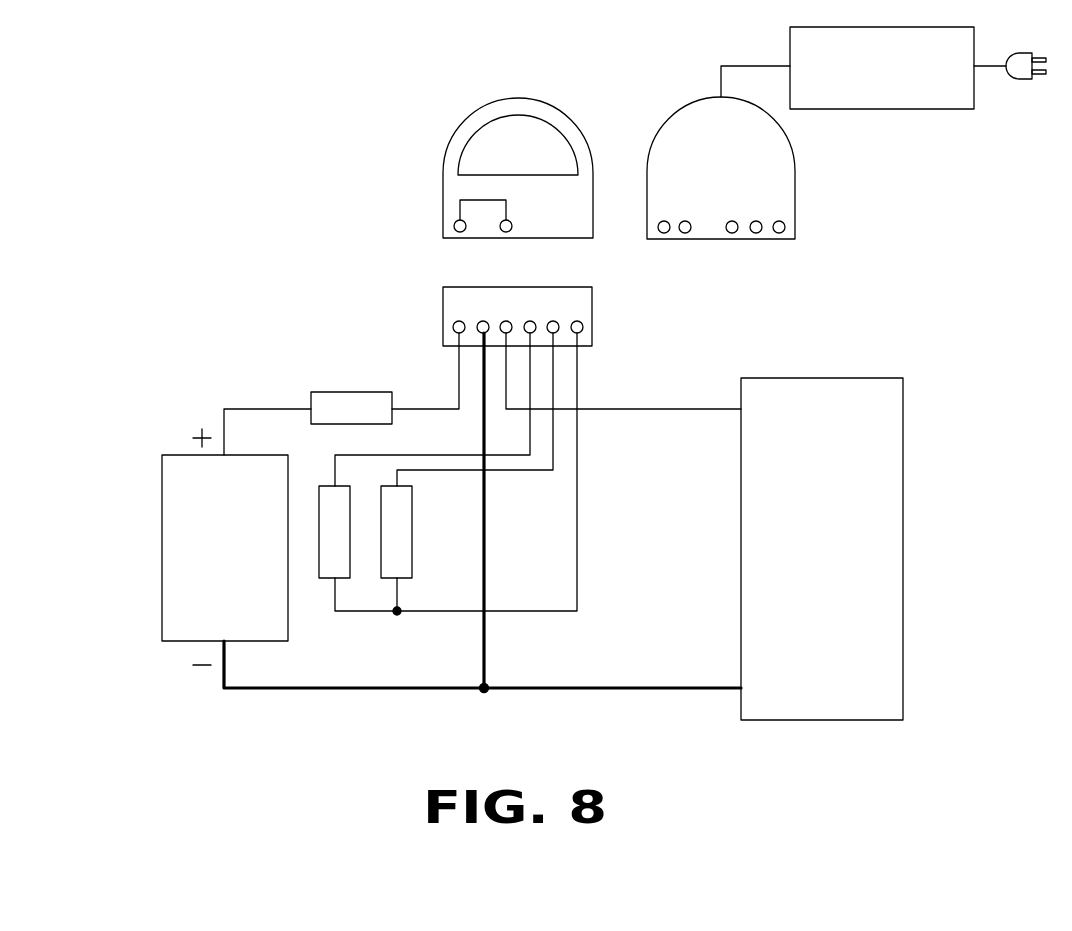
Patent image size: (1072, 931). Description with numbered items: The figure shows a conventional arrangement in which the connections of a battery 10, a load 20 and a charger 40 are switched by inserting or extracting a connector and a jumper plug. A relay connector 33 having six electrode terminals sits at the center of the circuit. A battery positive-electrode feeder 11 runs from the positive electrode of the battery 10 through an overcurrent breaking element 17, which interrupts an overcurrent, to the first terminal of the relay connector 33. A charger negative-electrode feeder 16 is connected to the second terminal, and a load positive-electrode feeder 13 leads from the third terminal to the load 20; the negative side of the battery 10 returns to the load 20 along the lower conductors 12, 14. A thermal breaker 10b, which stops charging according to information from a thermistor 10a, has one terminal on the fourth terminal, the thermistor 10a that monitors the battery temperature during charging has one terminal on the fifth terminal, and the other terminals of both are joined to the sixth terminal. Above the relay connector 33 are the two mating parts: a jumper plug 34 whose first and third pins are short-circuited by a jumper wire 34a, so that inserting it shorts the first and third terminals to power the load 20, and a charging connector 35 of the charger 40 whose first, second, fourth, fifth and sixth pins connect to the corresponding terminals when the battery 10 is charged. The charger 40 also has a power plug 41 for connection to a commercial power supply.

The battery 10 is at (162, 551).
The thermistor 10a is at (412, 505).
The thermal breaker 10b is at (318, 574).
The battery positive-electrode feeder 11 is at (244, 408).
The negative power line 12 is at (357, 691).
The load positive-electrode feeder 13 is at (662, 409).
The load negative line 14 is at (620, 691).
The charger negative-electrode feeder 16 is at (487, 650).
The overcurrent breaking element 17 is at (348, 392).
The load 20 is at (905, 542).
The relay connector 33 is at (593, 311).
The jumper plug 34 is at (492, 163).
The jumper wire 34a is at (478, 196).
The charging connector 35 is at (672, 117).
The charger 40 is at (884, 110).
The power plug 41 is at (1024, 80).